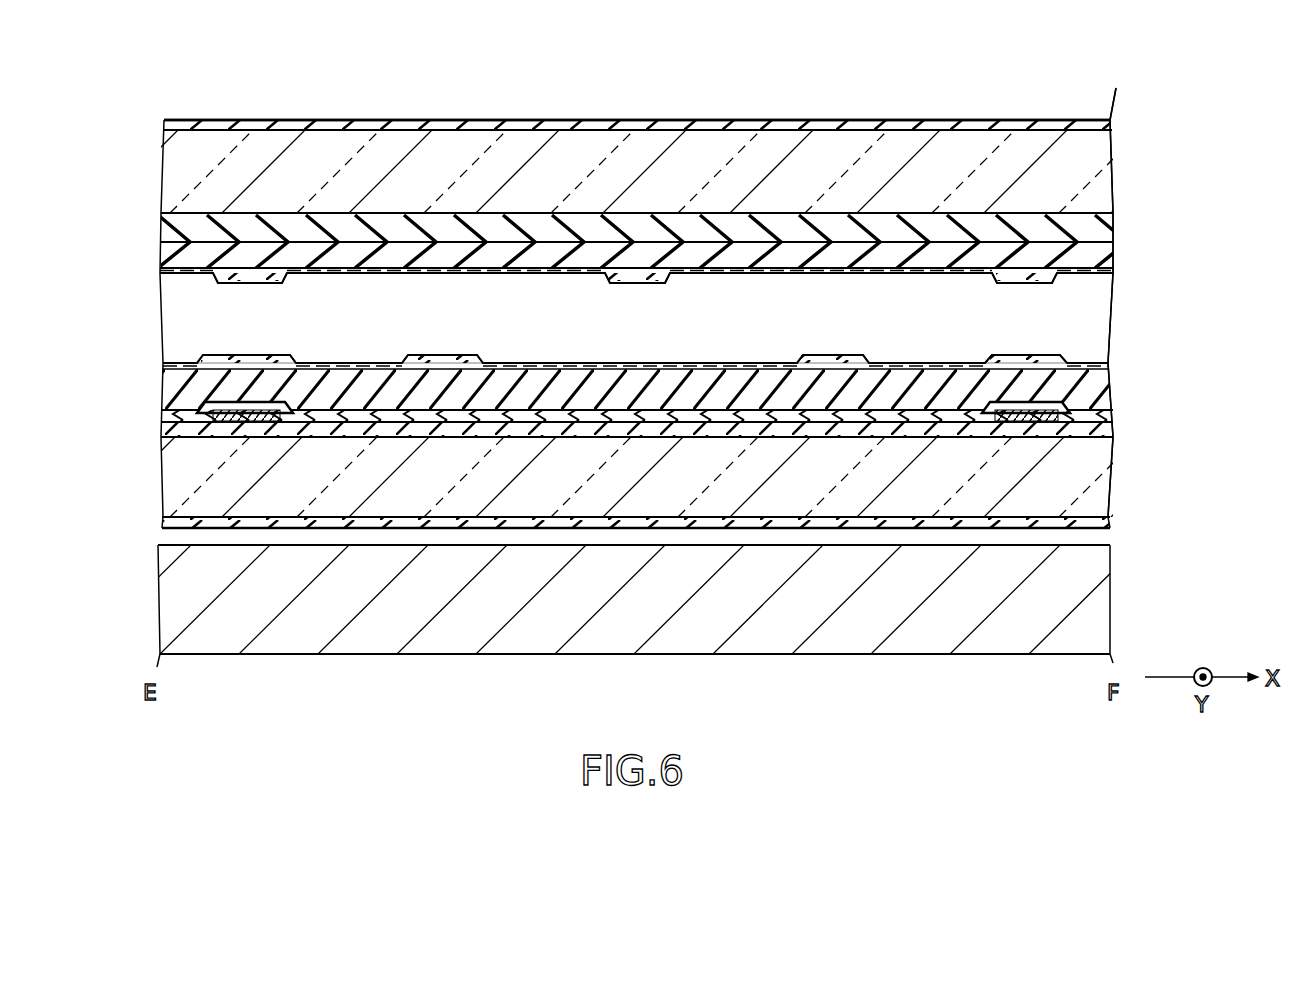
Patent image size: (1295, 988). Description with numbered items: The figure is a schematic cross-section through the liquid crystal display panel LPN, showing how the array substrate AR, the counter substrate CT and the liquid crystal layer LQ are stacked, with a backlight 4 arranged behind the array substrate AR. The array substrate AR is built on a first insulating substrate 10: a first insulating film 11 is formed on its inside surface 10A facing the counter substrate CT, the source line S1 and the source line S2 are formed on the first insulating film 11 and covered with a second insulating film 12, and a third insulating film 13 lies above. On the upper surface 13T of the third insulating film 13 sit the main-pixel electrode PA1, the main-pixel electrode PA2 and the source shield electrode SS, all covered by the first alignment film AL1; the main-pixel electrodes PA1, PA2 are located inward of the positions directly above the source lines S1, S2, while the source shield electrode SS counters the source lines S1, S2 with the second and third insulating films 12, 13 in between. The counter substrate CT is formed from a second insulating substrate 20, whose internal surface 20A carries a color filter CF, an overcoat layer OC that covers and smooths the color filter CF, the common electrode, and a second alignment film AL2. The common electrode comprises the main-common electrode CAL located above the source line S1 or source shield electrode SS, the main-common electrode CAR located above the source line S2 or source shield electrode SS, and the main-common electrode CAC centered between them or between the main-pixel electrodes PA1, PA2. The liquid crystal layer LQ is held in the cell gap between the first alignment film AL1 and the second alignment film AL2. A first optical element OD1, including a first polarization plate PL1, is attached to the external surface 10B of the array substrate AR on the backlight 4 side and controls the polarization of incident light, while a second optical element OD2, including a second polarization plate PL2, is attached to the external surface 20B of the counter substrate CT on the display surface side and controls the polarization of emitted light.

The external surface of the counter substrate 20B is at (212, 117).
The second optical element OD2 is at (165, 124).
The second polarization plate PL2 is at (594, 137).
The second insulating substrate 20 is at (168, 178).
The color filter CF is at (170, 222).
The internal surface of the second insulating substrate 20A is at (593, 167).
The overcoat layer OC is at (200, 226).
The second alignment film AL2 is at (167, 271).
The main-common electrode CAL is at (262, 284).
The main-common electrode CAC is at (638, 284).
The main-common electrode CAR is at (1020, 284).
The liquid crystal layer LQ is at (1102, 322).
The liquid crystal display panel LPN is at (1125, 99).
The counter substrate CT is at (1125, 145).
The array substrate AR is at (1117, 374).
The first alignment film AL1 is at (168, 366).
The main-pixel electrode PA1 is at (442, 355).
The main-pixel electrode PA2 is at (833, 355).
The source shield electrode SS is at (271, 360).
The upper surface of the third insulating film 13T is at (558, 353).
The third insulating film 13 is at (168, 385).
The source line S1 is at (239, 402).
The source line S2 is at (1005, 400).
The second insulating film 12 is at (165, 412).
The first insulating film 11 is at (165, 428).
The first insulating substrate 10 is at (168, 478).
The inside surface of the first insulating substrate 10A is at (337, 413).
The first optical element OD1 is at (165, 520).
The first polarization plate PL1 is at (591, 538).
The external surface of the array substrate 10B is at (212, 538).
The backlight 4 is at (1105, 632).